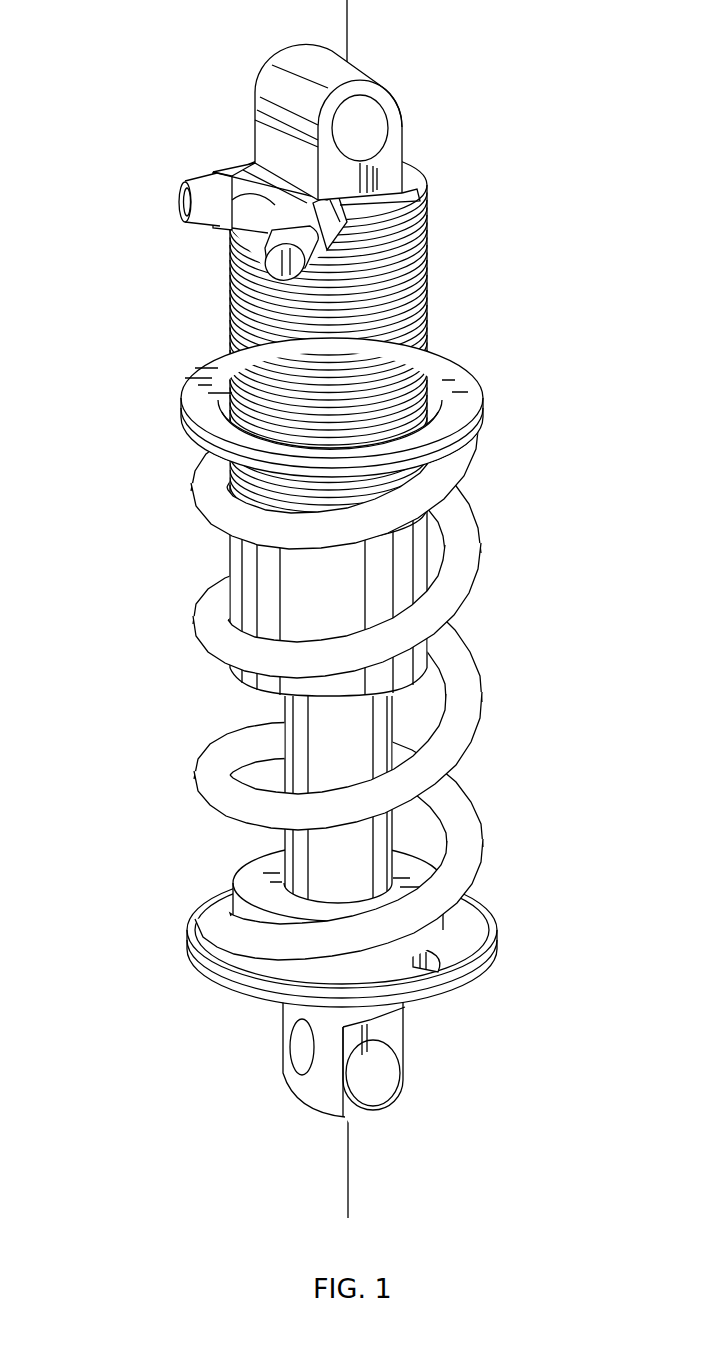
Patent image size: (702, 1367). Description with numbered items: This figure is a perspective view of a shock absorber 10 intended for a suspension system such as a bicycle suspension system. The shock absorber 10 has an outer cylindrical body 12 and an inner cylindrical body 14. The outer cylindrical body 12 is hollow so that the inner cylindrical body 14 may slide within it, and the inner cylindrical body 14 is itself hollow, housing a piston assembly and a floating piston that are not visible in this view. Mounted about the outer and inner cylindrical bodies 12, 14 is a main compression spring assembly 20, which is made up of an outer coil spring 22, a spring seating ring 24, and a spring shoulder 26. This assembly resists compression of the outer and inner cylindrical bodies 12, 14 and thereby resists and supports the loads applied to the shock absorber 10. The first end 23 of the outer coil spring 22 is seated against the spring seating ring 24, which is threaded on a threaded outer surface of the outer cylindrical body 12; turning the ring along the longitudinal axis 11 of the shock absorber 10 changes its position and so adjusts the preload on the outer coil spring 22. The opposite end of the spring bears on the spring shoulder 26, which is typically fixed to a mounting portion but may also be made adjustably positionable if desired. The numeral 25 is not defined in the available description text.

The shock absorber 10 is at (121, 394).
The longitudinal axis 11 is at (348, 13).
The outer cylindrical body 12 is at (427, 257).
The inner cylindrical body 14 is at (290, 717).
The main compression spring assembly 20 is at (517, 580).
The outer coil spring 22 is at (464, 730).
The first end 23 is at (457, 470).
The spring seating ring 24 is at (468, 393).
The lower end coil 25 is at (473, 898).
The spring shoulder 26 is at (487, 958).